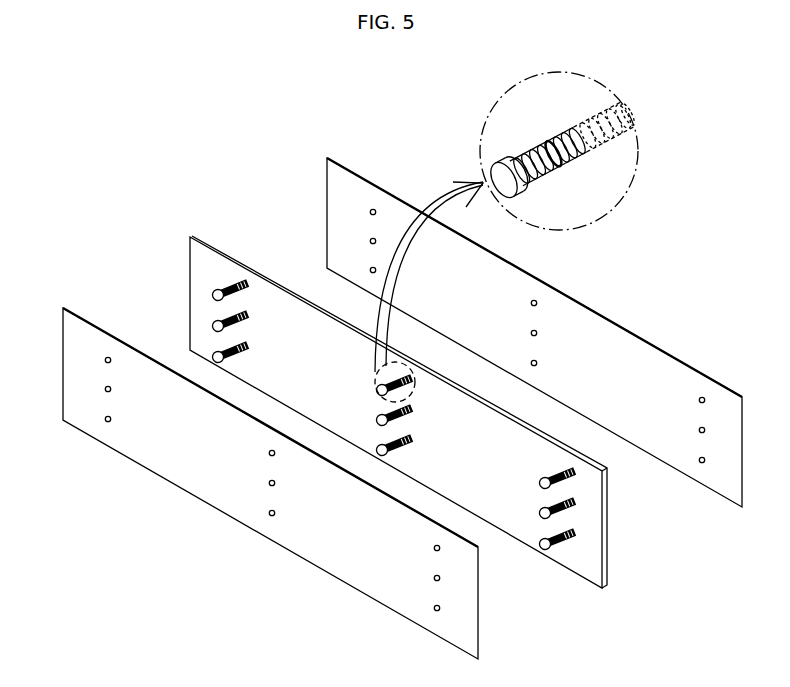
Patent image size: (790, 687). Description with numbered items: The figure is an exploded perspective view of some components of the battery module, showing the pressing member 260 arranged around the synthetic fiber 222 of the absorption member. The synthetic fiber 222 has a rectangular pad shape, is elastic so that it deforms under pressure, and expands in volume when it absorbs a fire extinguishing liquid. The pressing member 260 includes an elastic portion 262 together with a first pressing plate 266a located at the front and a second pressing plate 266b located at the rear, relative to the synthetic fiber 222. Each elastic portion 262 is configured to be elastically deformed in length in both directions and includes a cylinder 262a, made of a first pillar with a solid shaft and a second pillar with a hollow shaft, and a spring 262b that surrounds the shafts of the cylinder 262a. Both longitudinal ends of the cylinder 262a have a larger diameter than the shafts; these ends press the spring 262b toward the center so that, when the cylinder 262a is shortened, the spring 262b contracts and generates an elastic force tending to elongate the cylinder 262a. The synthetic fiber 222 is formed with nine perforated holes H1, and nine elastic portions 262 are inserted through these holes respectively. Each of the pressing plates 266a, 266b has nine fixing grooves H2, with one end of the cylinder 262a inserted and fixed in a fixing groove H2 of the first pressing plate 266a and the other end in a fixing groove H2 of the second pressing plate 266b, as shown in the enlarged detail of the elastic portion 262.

The pressing member 260 is at (233, 606).
The elastic portion 262 is at (253, 168).
The cylinder 262a is at (212, 292).
The spring 262b is at (241, 280).
The first pressing plate 266a is at (251, 454).
The second pressing plate 266b is at (514, 302).
The synthetic fiber 222 is at (436, 412).
The perforated hole H1 is at (406, 364).
The fixing groove H2 is at (533, 300).